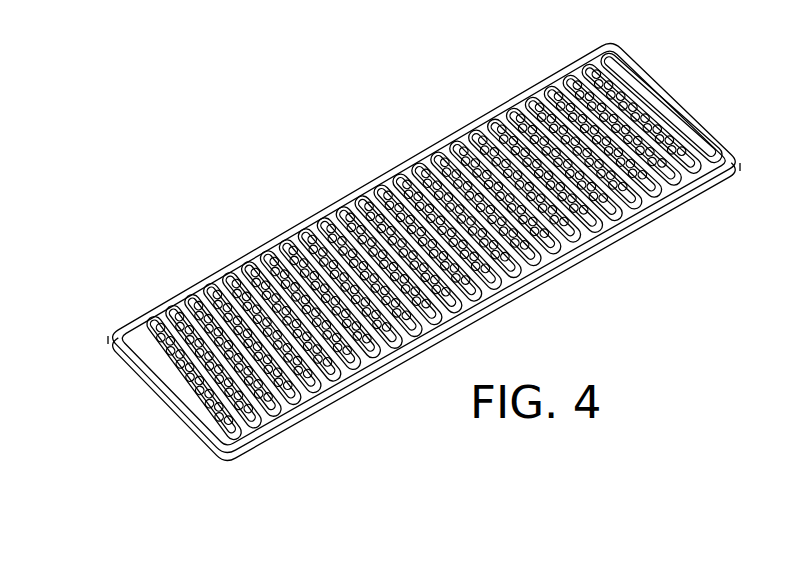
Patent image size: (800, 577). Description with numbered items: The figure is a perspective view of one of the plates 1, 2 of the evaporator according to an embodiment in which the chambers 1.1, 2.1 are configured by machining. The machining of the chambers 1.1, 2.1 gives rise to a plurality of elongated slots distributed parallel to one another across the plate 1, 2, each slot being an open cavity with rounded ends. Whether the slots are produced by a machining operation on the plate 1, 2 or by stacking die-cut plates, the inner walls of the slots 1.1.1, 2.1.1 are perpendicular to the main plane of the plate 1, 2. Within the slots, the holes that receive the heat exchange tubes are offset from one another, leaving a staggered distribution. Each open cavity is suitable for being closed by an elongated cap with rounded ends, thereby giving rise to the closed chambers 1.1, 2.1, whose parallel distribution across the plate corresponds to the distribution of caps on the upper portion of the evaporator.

The plate 1 is at (424, 252).
The plate 2 is at (257, 181).
The chamber 1.1 is at (384, 246).
The chamber 2.1 is at (187, 300).
The inner wall of slot 1.1.1 is at (418, 305).
The inner wall of slot 2.1.1 is at (223, 442).